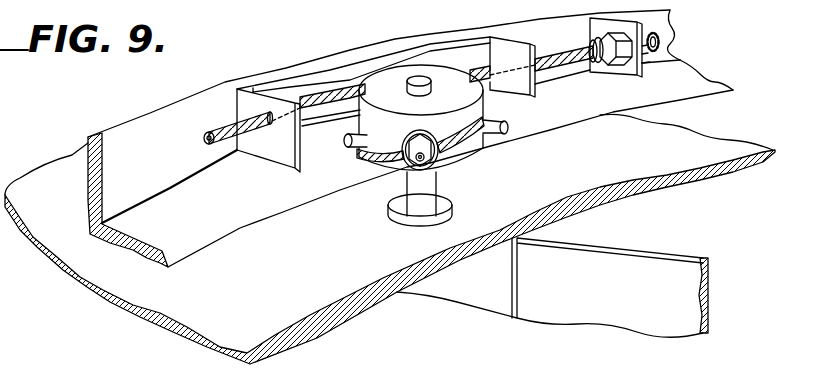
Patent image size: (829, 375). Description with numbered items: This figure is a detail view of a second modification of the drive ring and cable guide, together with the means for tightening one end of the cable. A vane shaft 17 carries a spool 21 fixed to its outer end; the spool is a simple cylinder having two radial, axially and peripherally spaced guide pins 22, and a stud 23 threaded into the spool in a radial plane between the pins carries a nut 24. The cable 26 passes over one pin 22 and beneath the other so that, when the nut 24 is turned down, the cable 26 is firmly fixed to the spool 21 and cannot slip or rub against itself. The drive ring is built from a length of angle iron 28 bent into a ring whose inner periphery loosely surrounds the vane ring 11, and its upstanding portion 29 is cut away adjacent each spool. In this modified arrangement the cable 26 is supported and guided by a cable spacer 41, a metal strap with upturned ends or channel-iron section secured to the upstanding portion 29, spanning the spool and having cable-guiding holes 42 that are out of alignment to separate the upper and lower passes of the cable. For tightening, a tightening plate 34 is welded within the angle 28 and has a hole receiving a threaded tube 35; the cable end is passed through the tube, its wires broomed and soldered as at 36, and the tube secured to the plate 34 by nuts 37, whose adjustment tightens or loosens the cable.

The vane ring 11 is at (249, 328).
The vane shaft 17 is at (440, 190).
The spool 21 is at (473, 155).
The guide pins 22 is at (350, 147).
The stud 23 is at (417, 167).
The nut 24 is at (407, 168).
The cable 26 is at (203, 140).
The angle iron 28 is at (202, 238).
The upstanding portion 29 is at (113, 144).
The tightening plate 34 is at (630, 72).
The threaded tube 35 is at (601, 67).
The broomed and soldered cable end 36 is at (659, 42).
The nuts 37 is at (646, 62).
The cable spacer 41 is at (320, 87).
The cable-guiding holes 42 is at (273, 123).